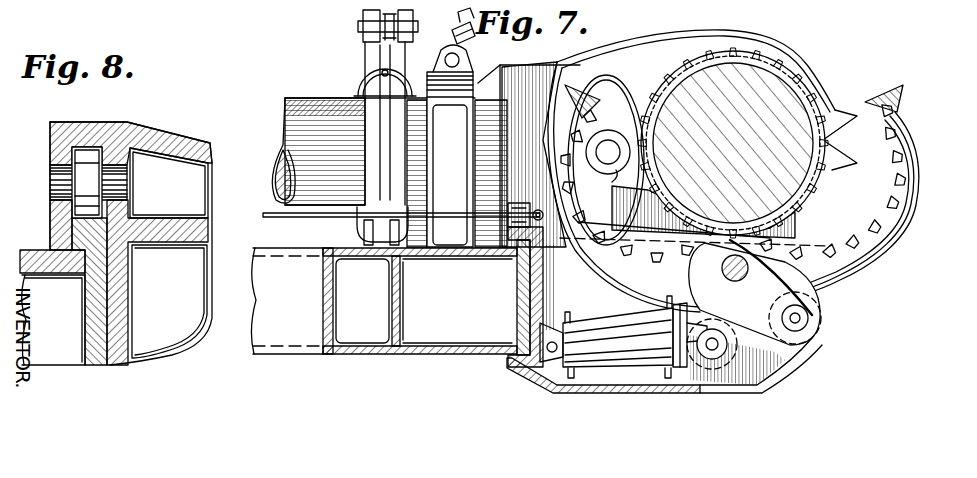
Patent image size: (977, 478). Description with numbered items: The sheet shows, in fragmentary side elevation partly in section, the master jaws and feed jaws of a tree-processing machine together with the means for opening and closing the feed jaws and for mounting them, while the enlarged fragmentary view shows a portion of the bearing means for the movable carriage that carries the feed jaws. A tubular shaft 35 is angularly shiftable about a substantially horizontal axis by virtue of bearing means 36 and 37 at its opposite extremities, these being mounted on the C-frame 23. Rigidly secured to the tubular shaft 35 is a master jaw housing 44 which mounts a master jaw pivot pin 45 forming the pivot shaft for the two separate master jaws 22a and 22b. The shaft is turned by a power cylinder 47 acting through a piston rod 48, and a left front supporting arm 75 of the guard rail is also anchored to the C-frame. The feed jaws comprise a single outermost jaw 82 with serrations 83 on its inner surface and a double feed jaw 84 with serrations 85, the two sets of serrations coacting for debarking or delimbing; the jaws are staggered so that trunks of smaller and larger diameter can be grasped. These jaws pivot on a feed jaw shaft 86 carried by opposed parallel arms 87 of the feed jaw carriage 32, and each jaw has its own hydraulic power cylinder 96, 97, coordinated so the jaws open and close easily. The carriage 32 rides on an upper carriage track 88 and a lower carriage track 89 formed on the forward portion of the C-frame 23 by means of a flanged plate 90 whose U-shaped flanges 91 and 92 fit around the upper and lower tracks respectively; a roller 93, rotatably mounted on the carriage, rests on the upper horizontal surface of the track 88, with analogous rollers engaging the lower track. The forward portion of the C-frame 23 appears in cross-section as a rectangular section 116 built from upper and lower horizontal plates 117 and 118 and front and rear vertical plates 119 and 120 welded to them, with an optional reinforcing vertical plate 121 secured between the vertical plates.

In FIG. 8, the C-frame 23 is at (52, 357).
In FIG. 7, the C-frame 23 is at (417, 356).
In FIG. 7, the feed jaw carriage 32 is at (793, 364).
In FIG. 7, the tubular shaft 35 is at (290, 97).
In FIG. 7, the bearing means 36 is at (438, 68).
In FIG. 7, the bearing means 37 is at (425, 128).
In FIG. 7, the master jaw housing 44 is at (523, 66).
In FIG. 7, the master jaw pivot pin 45 is at (608, 167).
In FIG. 7, the tubular shaft turning power cylinder 47 is at (372, 94).
In FIG. 7, the piston rod 48 is at (388, 44).
In FIG. 7, the left front supporting arm 75 is at (458, 30).
In FIG. 7, the single feed jaw 82 is at (888, 88).
In FIG. 7, the serrations 83 is at (890, 160).
In FIG. 7, the double feed jaw 84 is at (586, 98).
In FIG. 7, the serrations 85 is at (592, 134).
In FIG. 7, the feed jaw shaft 86 is at (745, 278).
In FIG. 8, the arms 87 is at (158, 137).
In FIG. 8, the upper carriage track 88 is at (60, 236).
In FIG. 7, the upper carriage track 88 is at (513, 258).
In FIG. 7, the lower carriage track 89 is at (520, 343).
In FIG. 8, the flanged plate 90 is at (125, 294).
In FIG. 7, the flanged plate 90 is at (540, 274).
In FIG. 7, the U-shaped flange 91 is at (528, 212).
In FIG. 7, the U-shaped flange 92 is at (518, 364).
In FIG. 8, the roller 93 is at (88, 158).
In FIG. 7, the power cylinder 96 is at (648, 362).
In FIG. 7, the power cylinder 97 is at (620, 362).
In FIG. 7, the rectangular section 116 is at (322, 326).
In FIG. 7, the upper horizontal plate 117 is at (337, 253).
In FIG. 7, the lower horizontal plate 118 is at (374, 354).
In FIG. 7, the front vertical plate 119 is at (523, 296).
In FIG. 7, the rear vertical plate 120 is at (323, 284).
In FIG. 7, the reinforcing vertical plate 121 is at (392, 302).
In FIG. 7, the master jaw 22a is at (790, 44).
In FIG. 7, the master jaw 22b is at (806, 234).